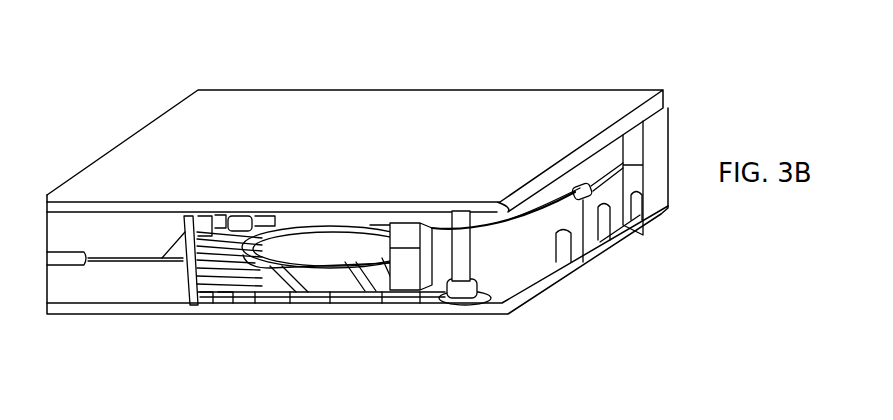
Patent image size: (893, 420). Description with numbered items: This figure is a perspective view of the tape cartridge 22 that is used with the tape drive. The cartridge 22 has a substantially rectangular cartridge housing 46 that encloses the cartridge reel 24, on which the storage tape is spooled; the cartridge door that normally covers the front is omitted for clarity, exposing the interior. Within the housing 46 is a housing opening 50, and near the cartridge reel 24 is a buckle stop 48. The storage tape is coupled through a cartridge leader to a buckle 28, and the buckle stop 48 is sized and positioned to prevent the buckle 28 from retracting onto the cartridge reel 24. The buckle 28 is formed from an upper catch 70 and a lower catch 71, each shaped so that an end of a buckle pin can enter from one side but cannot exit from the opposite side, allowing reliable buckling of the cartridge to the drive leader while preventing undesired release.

The cartridge 22 is at (365, 76).
The cartridge housing 46 is at (528, 88).
The upper catch 70 is at (228, 217).
The buckle stop 48 is at (155, 268).
The buckle 28 is at (201, 304).
The lower catch 71 is at (308, 298).
The cartridge reel 24 is at (328, 315).
The housing opening 50 is at (383, 315).